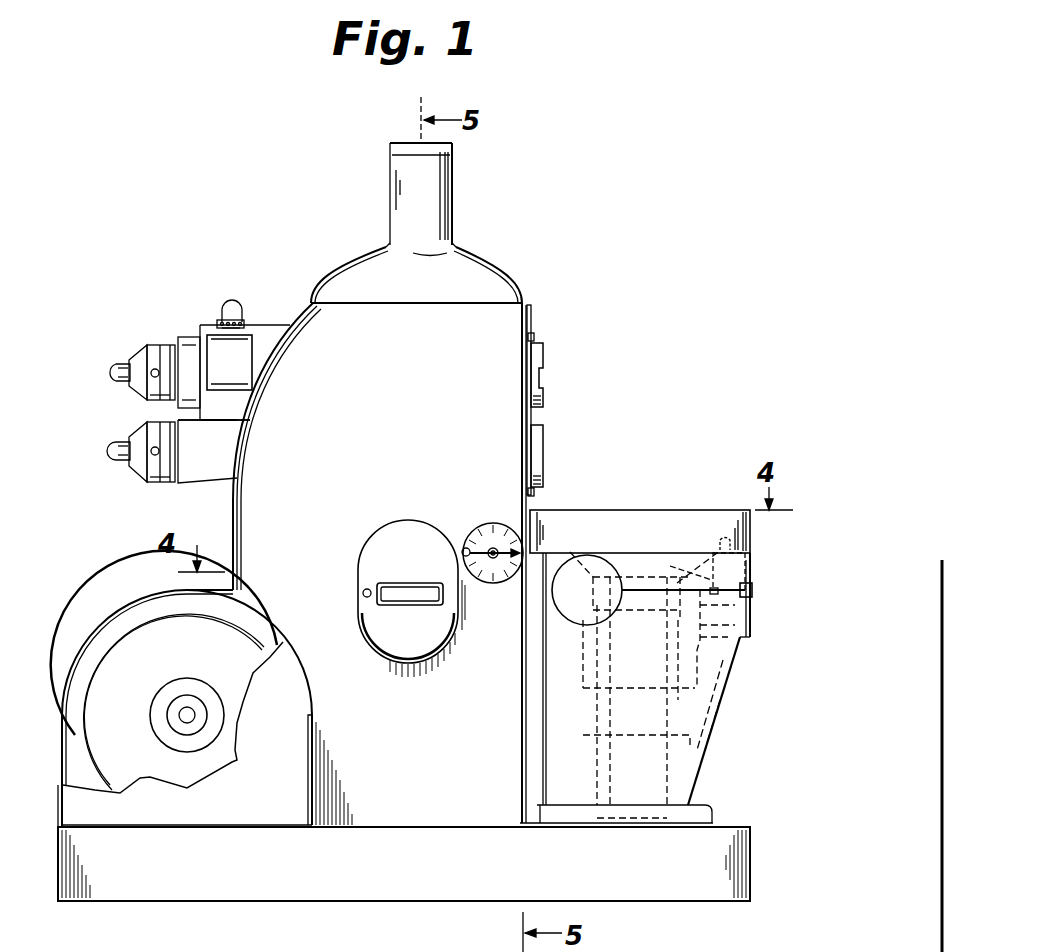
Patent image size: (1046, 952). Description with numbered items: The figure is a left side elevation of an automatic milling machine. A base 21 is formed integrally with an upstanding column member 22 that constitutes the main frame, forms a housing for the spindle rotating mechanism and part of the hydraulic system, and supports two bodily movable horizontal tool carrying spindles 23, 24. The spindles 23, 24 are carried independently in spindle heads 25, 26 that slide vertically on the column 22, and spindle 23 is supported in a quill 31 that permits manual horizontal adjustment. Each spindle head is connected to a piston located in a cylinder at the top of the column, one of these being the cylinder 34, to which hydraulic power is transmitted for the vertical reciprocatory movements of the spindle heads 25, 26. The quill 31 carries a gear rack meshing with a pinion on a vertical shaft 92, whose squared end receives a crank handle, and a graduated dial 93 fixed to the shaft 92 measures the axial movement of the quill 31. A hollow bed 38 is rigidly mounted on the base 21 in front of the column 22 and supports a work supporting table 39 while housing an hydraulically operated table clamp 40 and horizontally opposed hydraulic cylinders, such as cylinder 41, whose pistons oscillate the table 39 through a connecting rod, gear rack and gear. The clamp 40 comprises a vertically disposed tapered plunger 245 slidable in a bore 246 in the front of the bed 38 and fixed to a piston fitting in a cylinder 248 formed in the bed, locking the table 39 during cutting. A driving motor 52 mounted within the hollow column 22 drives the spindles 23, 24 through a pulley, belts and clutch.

The base 21 is at (728, 830).
The column member 22 is at (270, 497).
The tool carrying spindle 23 is at (543, 357).
The tool carrying spindle 24 is at (538, 451).
The spindle head 25 is at (534, 336).
The spindle head 26 is at (531, 497).
The quill 31 is at (190, 345).
The cylinder 34 is at (433, 208).
The hollow bed 38 is at (708, 678).
The work supporting table 39 is at (628, 525).
The table clamp 40 is at (755, 584).
The hydraulic cylinder 41 is at (573, 600).
The driving motor 52 is at (125, 662).
The vertical shaft 92 is at (239, 313).
The graduated dial 93 is at (210, 335).
The tapered plunger 245 is at (730, 545).
The bore 246 is at (745, 572).
The cylinder 248 is at (671, 568).